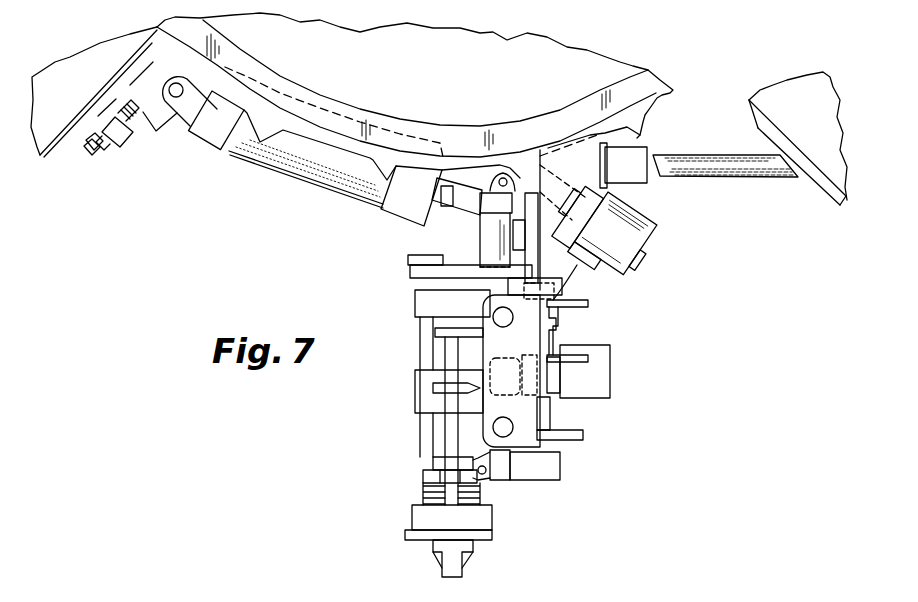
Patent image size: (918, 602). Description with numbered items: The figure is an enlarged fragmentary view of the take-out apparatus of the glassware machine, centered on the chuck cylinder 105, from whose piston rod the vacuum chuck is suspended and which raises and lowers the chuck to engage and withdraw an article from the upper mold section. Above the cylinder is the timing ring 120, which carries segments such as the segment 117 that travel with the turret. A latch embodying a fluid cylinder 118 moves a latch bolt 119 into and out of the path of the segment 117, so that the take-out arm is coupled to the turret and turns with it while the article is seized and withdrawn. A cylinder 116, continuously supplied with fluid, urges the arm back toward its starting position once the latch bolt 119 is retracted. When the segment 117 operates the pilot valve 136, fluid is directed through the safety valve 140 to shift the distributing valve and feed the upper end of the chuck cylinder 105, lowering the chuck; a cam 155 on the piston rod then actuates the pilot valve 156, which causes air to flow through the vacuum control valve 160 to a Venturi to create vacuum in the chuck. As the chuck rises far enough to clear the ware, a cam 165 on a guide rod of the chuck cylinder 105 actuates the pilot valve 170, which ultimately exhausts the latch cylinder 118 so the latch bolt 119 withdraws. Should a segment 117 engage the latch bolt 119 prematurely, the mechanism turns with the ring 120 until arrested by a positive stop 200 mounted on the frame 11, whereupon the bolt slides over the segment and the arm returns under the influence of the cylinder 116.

The frame 11 is at (786, 87).
The timing ring 120 is at (655, 100).
The segment 117 is at (633, 128).
The latch bolt 119 is at (530, 174).
The fluid cylinder 118 is at (657, 217).
The positive stop 200 is at (747, 180).
The cylinder 116 is at (313, 185).
The pilot valve 136 is at (480, 246).
The vacuum control valve 160 is at (410, 253).
The pilot valve 170 is at (410, 268).
The chuck cylinder 105 is at (420, 330).
The safety valve 140 is at (547, 319).
The cam 165 is at (433, 388).
The cam 155 is at (433, 458).
The pilot valve 156 is at (553, 482).